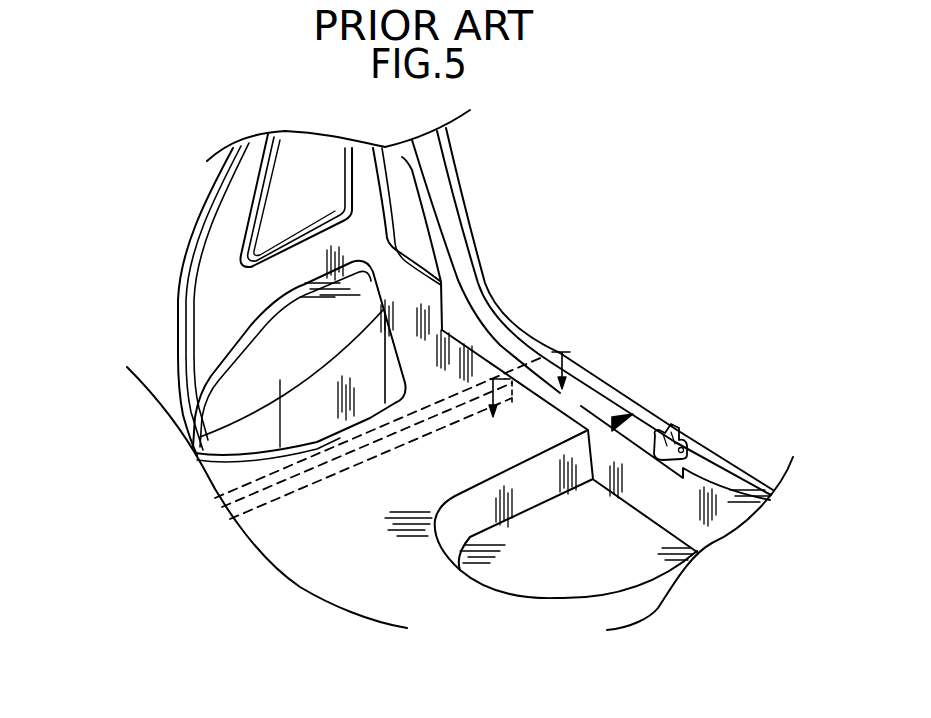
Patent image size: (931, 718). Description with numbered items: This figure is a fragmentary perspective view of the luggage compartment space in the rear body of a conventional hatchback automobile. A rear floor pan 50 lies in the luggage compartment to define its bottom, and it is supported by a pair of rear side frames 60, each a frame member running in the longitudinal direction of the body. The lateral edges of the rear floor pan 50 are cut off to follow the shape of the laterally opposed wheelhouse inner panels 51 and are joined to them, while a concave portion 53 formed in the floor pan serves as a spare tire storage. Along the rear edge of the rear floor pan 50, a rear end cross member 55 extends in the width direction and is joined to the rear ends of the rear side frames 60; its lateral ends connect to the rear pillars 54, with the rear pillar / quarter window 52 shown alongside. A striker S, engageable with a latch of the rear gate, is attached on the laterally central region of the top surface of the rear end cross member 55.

The rear floor pan 50 is at (277, 537).
The wheelhouse inner panel 51 is at (292, 328).
The rear pillar / quarter window 52 is at (242, 183).
The concave portion 53 is at (557, 597).
The rear pillar 54 is at (466, 197).
The rear end cross member 55 is at (568, 353).
The rear side frame 60 is at (213, 495).
The striker S is at (670, 430).